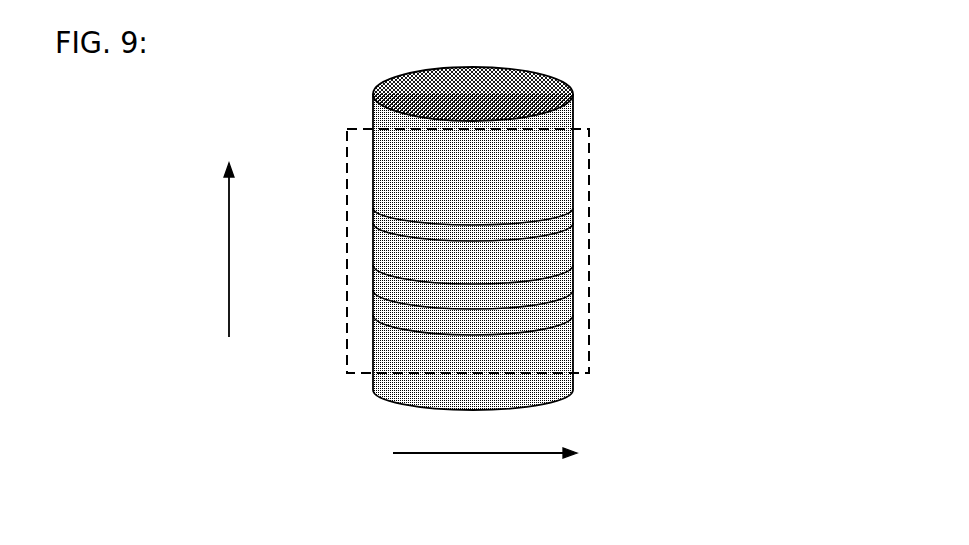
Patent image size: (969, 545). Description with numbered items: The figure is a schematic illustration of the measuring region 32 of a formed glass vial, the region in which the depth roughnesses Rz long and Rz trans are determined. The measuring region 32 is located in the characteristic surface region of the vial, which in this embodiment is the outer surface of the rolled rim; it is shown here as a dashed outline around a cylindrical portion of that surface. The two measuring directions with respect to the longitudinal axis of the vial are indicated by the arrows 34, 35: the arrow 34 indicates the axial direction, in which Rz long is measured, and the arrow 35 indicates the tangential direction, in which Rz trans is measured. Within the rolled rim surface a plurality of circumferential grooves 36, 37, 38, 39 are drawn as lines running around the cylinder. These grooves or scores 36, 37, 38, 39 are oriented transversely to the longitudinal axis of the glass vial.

The measuring region 32 is at (592, 260).
The arrow 34 is at (229, 246).
The arrow 35 is at (482, 453).
The circumferential groove 36 is at (573, 210).
The circumferential groove 37 is at (373, 223).
The circumferential groove 38 is at (573, 298).
The circumferential groove 39 is at (573, 324).